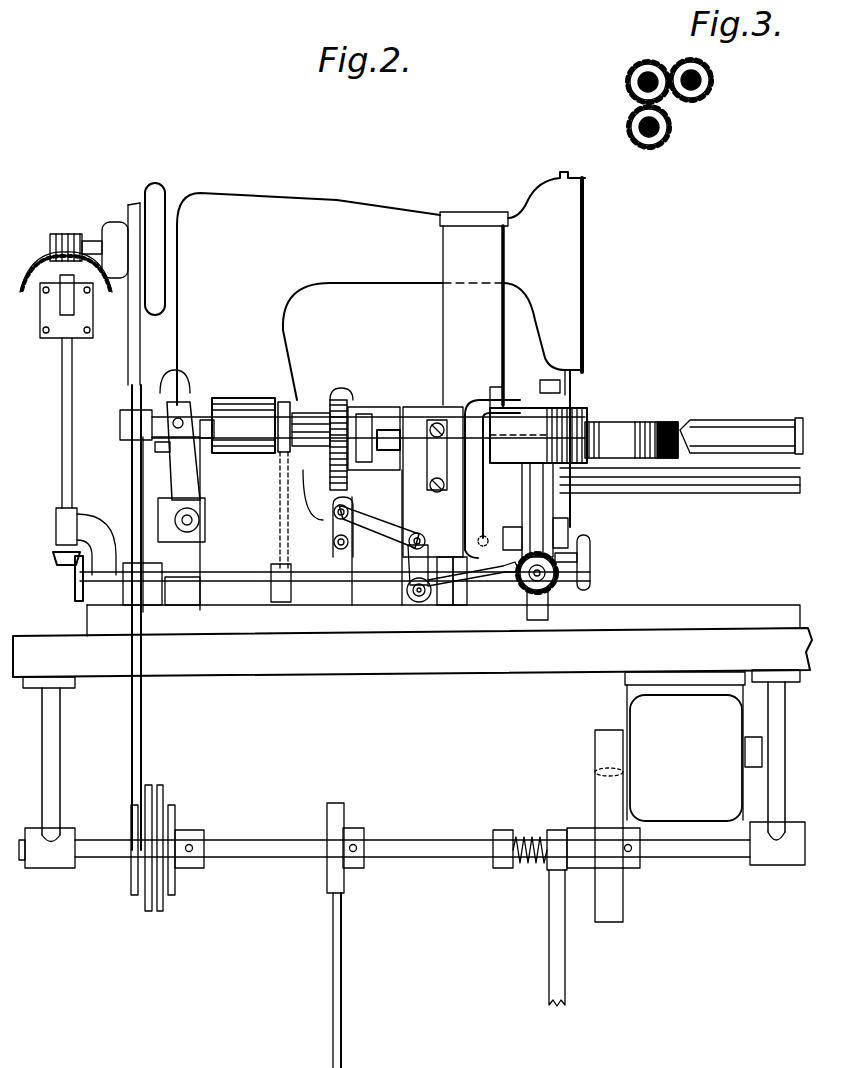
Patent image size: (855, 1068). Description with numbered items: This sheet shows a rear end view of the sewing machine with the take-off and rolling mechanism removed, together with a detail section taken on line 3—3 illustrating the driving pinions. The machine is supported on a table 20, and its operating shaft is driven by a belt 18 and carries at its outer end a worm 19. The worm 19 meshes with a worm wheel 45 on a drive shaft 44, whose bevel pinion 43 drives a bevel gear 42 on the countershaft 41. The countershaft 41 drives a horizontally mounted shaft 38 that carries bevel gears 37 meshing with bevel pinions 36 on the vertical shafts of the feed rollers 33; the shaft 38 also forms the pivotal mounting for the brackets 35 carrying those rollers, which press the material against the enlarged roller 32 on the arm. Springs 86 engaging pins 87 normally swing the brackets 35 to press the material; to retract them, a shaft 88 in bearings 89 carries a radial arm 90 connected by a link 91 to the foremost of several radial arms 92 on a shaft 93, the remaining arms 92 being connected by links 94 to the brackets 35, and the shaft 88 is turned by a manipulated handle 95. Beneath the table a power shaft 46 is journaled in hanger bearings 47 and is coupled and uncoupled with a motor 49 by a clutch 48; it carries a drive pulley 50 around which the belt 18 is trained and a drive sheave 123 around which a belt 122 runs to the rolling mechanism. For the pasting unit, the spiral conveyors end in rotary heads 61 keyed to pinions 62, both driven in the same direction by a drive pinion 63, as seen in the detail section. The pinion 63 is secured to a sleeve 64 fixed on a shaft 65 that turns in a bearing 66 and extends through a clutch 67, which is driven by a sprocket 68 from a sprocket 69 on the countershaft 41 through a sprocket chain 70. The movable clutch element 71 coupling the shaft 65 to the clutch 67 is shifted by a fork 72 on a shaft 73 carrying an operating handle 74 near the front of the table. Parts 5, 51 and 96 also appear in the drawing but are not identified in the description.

In FIG. 2, the section line indicator 3 is at (342, 392).
In FIG. 2, the pin 5 is at (357, 494).
In FIG. 2, the belt 18 is at (128, 364).
In FIG. 2, the worm 19 is at (62, 236).
In FIG. 2, the table 20 is at (418, 606).
In FIG. 2, the enlarged roller 32 is at (646, 428).
In FIG. 2, the feed rollers 33 is at (553, 428).
In FIG. 2, the brackets 35 is at (482, 401).
In FIG. 2, the bevel pinion 36 is at (589, 553).
In FIG. 2, the bevel gears 37 is at (551, 588).
In FIG. 2, the horizontally mounted shaft 38 is at (548, 600).
In FIG. 2, the countershaft 41 is at (228, 573).
In FIG. 2, the bevel gear 42 is at (74, 588).
In FIG. 2, the bevel pinion 43 is at (54, 558).
In FIG. 2, the drive shaft 44 is at (62, 412).
In FIG. 2, the worm wheel 45 is at (34, 262).
In FIG. 2, the power shaft 46 is at (281, 850).
In FIG. 2, the hanger bearings 47 is at (41, 856).
In FIG. 2, the clutch 48 is at (581, 830).
In FIG. 2, the motor 49 is at (642, 718).
In FIG. 2, the drive pulley 50 is at (137, 895).
In FIG. 2, the standard 51 is at (473, 232).
In FIG. 2, the rotary heads 61 is at (385, 411).
In FIG. 3, the pinions 62 is at (714, 85).
In FIG. 2, the pinions 62 is at (348, 403).
In FIG. 3, the drive pinion 63 is at (627, 75).
In FIG. 2, the sleeve 64 is at (312, 411).
In FIG. 2, the shaft 65 is at (203, 414).
In FIG. 2, the bearing 66 is at (121, 422).
In FIG. 2, the clutch 67 is at (236, 397).
In FIG. 2, the sprocket 68 is at (282, 401).
In FIG. 2, the sprocket 69 is at (278, 597).
In FIG. 2, the sprocket chain 70 is at (282, 508).
In FIG. 2, the movable clutch element 71 is at (193, 396).
In FIG. 2, the fork 72 is at (192, 492).
In FIG. 2, the shaft 73 is at (197, 542).
In FIG. 2, the operating handle 74 is at (168, 385).
In FIG. 2, the springs 86 is at (453, 591).
In FIG. 2, the pins 87 is at (503, 571).
In FIG. 2, the shaft 88 is at (334, 548).
In FIG. 2, the bearings 89 is at (336, 592).
In FIG. 2, the radial arm 90 is at (352, 528).
In FIG. 2, the link 91 is at (375, 528).
In FIG. 2, the radial arms 92 is at (402, 578).
In FIG. 2, the shaft 93 is at (418, 602).
In FIG. 2, the links 94 is at (443, 540).
In FIG. 2, the manipulated handle 95 is at (334, 393).
In FIG. 2, the rod 96 is at (699, 490).
In FIG. 2, the belt 122 is at (343, 969).
In FIG. 2, the drive sheave or pulley 123 is at (345, 818).